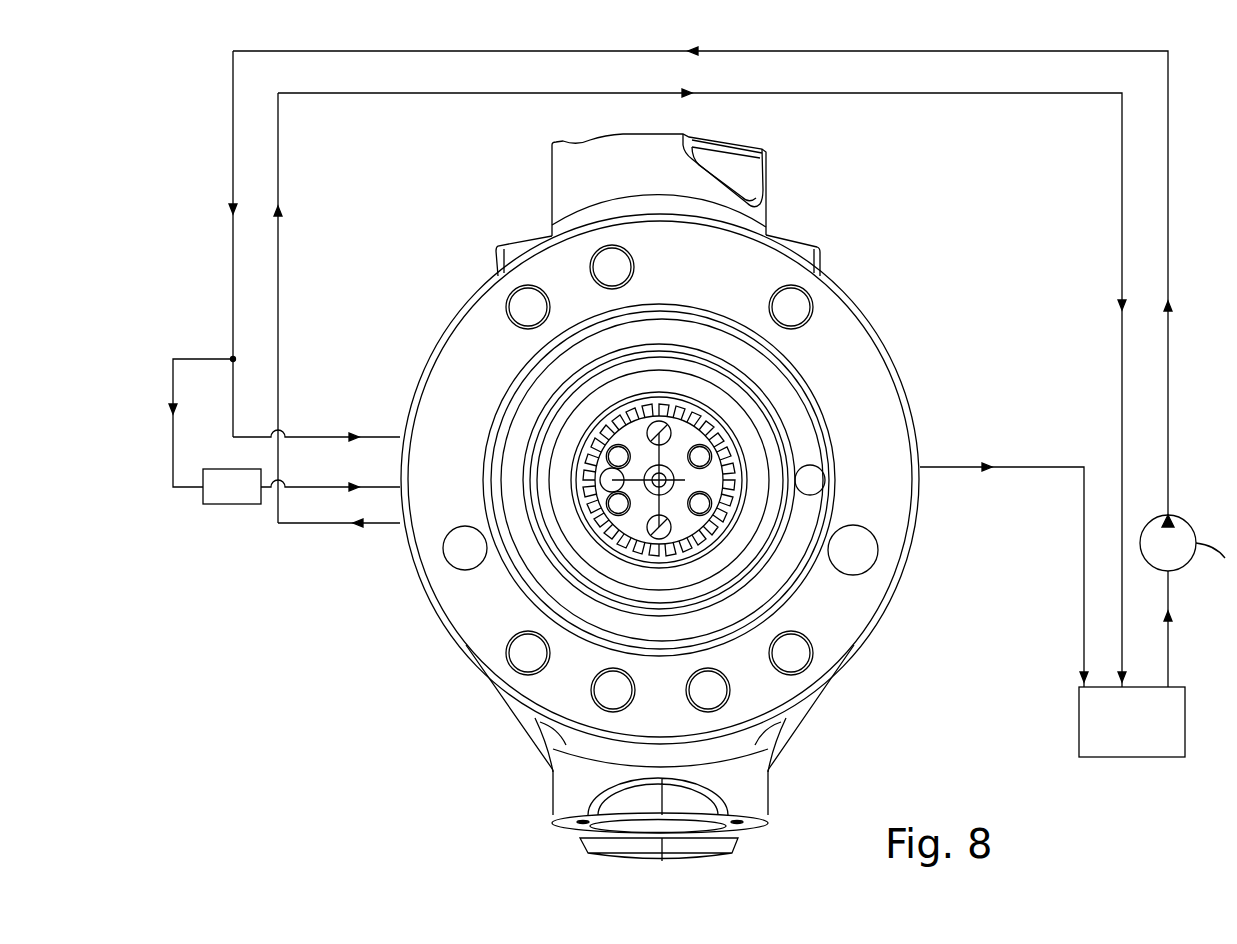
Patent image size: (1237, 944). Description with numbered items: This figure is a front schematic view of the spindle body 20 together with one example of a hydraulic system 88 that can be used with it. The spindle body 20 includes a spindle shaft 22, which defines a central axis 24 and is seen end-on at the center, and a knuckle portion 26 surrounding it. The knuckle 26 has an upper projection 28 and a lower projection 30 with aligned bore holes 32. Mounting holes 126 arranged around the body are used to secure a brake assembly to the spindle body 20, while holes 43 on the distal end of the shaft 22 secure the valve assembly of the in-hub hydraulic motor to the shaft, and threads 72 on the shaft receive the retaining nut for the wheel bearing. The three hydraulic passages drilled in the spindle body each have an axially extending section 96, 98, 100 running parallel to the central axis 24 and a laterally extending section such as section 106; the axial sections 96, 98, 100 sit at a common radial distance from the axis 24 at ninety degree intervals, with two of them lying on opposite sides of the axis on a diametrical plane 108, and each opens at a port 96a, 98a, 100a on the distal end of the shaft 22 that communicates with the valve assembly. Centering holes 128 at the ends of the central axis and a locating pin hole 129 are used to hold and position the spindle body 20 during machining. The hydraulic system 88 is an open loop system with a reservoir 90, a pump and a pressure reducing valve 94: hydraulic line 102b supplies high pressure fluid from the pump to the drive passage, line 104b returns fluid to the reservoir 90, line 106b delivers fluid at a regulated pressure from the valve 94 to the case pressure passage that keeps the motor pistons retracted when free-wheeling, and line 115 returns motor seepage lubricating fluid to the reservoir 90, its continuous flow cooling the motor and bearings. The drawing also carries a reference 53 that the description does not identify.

The spindle body 20 is at (944, 230).
The spindle shaft 22 is at (565, 472).
The central axis 24 is at (600, 395).
The knuckle portion 26 is at (445, 367).
The upper projection 28 is at (555, 160).
The lower projection 30 is at (760, 797).
The bore holes 32 is at (722, 824).
The holes 43 is at (603, 433).
The shaft axis lines 53 is at (770, 525).
The threads 72 is at (790, 398).
The hydraulic system 88 is at (1194, 385).
The reservoir 90 is at (1110, 745).
The pressure reducing valve 94 is at (228, 487).
The axially extending section 96 is at (650, 415).
The port 96a is at (625, 420).
The axially extending section 98 is at (760, 555).
The port 98a is at (660, 545).
The axially extending section 100 is at (490, 380).
The port 100a is at (625, 500).
The hydraulic line 102b is at (318, 437).
The line 104b is at (318, 525).
The laterally extending section 106 is at (642, 560).
The line 106b is at (308, 492).
The plane 108 is at (812, 466).
The line 115 is at (1032, 470).
The mounting holes 126 is at (605, 262).
The centering holes 128 is at (745, 500).
The hole 129 is at (455, 567).